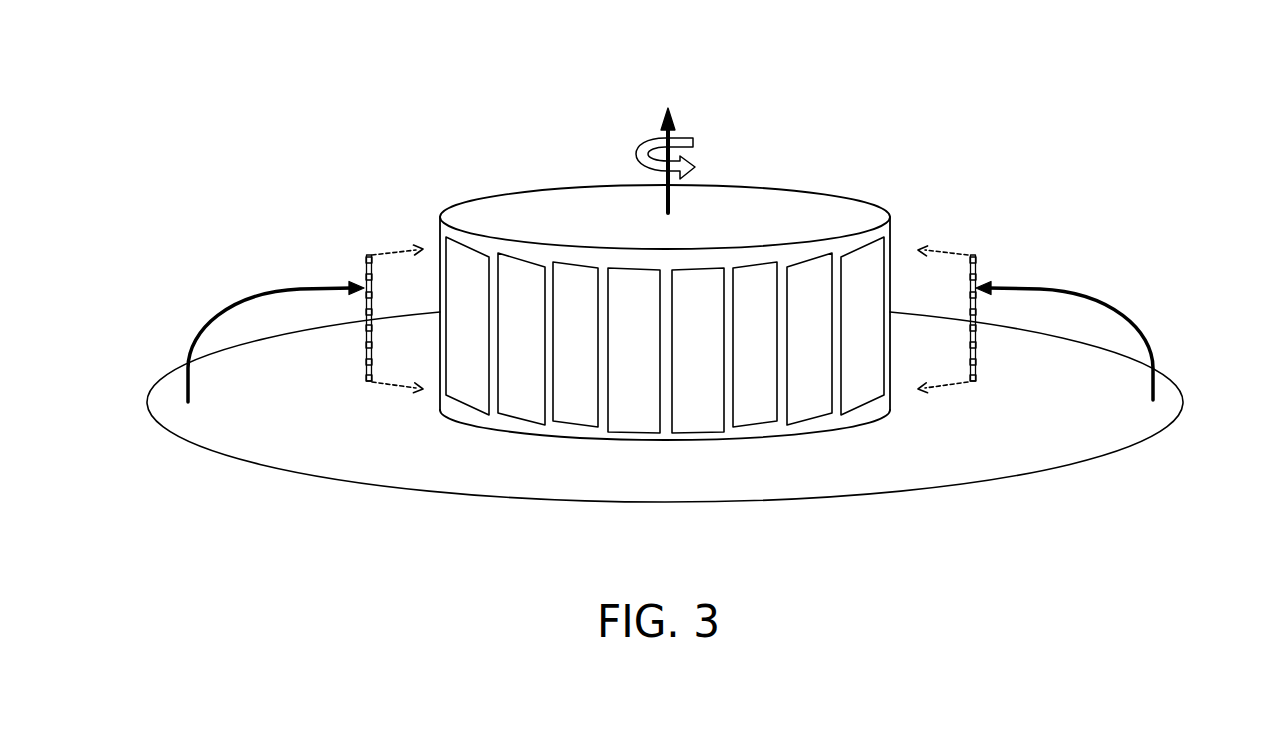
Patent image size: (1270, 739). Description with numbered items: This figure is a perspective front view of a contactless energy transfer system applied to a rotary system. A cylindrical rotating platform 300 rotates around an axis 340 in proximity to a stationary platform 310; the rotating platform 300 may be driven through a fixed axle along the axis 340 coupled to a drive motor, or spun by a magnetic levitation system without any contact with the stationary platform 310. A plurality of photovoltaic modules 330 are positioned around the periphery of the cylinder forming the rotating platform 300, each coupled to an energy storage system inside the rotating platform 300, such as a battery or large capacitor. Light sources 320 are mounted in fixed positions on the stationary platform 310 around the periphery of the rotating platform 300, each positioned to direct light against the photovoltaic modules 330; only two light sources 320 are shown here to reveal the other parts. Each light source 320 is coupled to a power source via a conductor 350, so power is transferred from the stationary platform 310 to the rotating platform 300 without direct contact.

The rotating platform 300 is at (476, 191).
The stationary platform 310 is at (353, 492).
The light source 320 is at (364, 249).
The photovoltaic module 330 is at (817, 352).
The axis 340 is at (669, 112).
The conductor 350 is at (230, 303).